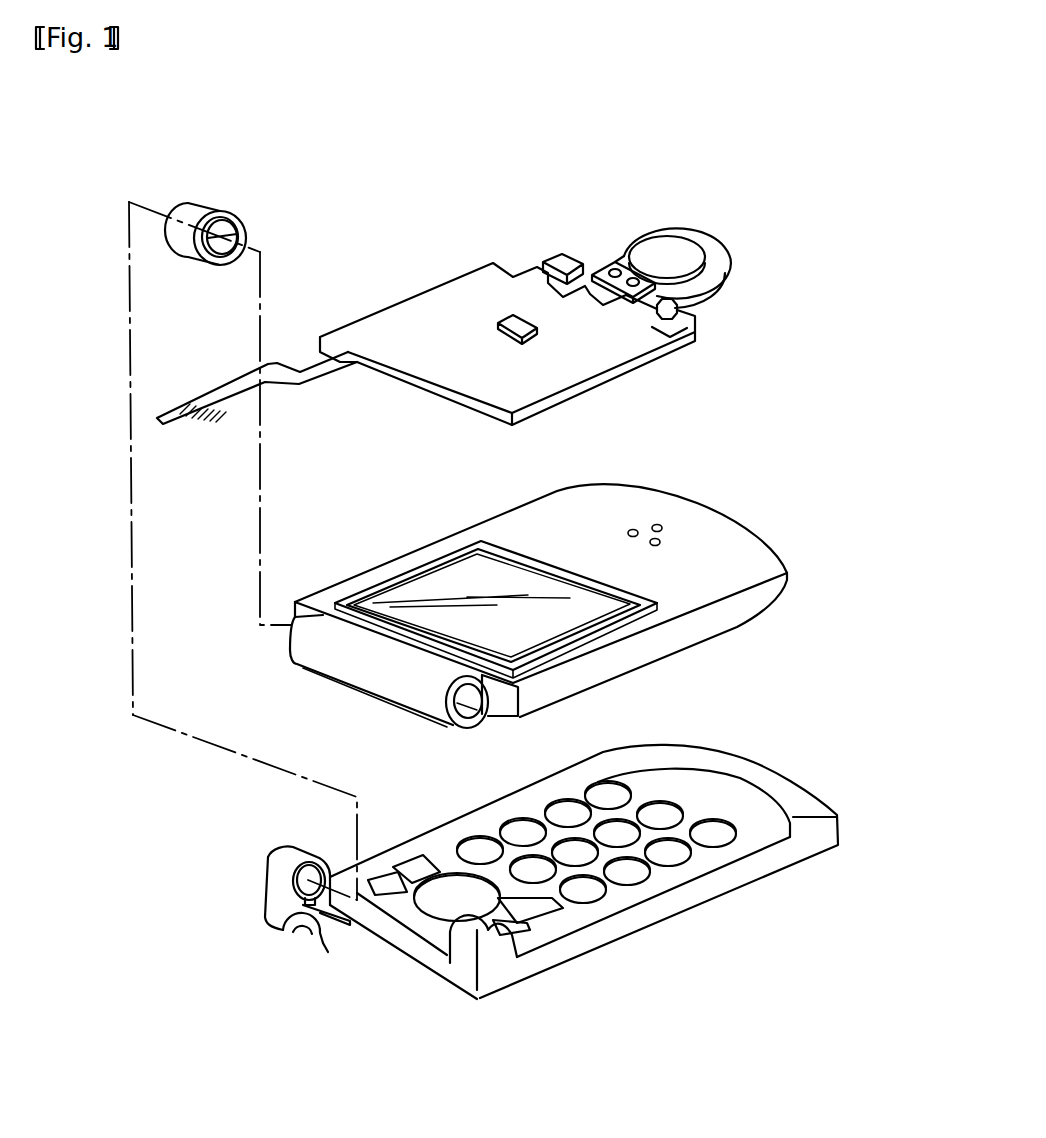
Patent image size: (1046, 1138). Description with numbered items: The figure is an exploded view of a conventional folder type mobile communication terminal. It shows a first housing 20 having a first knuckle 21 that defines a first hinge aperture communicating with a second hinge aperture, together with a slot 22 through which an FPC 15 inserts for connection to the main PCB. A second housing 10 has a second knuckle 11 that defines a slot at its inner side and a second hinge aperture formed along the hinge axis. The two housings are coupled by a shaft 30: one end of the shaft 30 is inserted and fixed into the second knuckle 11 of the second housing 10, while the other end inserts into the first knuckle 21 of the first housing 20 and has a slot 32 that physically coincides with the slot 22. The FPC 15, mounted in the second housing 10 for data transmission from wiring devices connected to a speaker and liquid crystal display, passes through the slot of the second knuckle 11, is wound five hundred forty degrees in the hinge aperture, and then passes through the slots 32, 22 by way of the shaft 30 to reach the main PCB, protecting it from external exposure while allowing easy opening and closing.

The second housing 10 is at (683, 507).
The second knuckle 11 is at (352, 668).
The FPC 15 is at (297, 383).
The first housing 20 is at (740, 758).
The first knuckle 21 is at (290, 857).
The slot 22 is at (330, 947).
The shaft 30 is at (188, 208).
The slot 32 is at (230, 250).